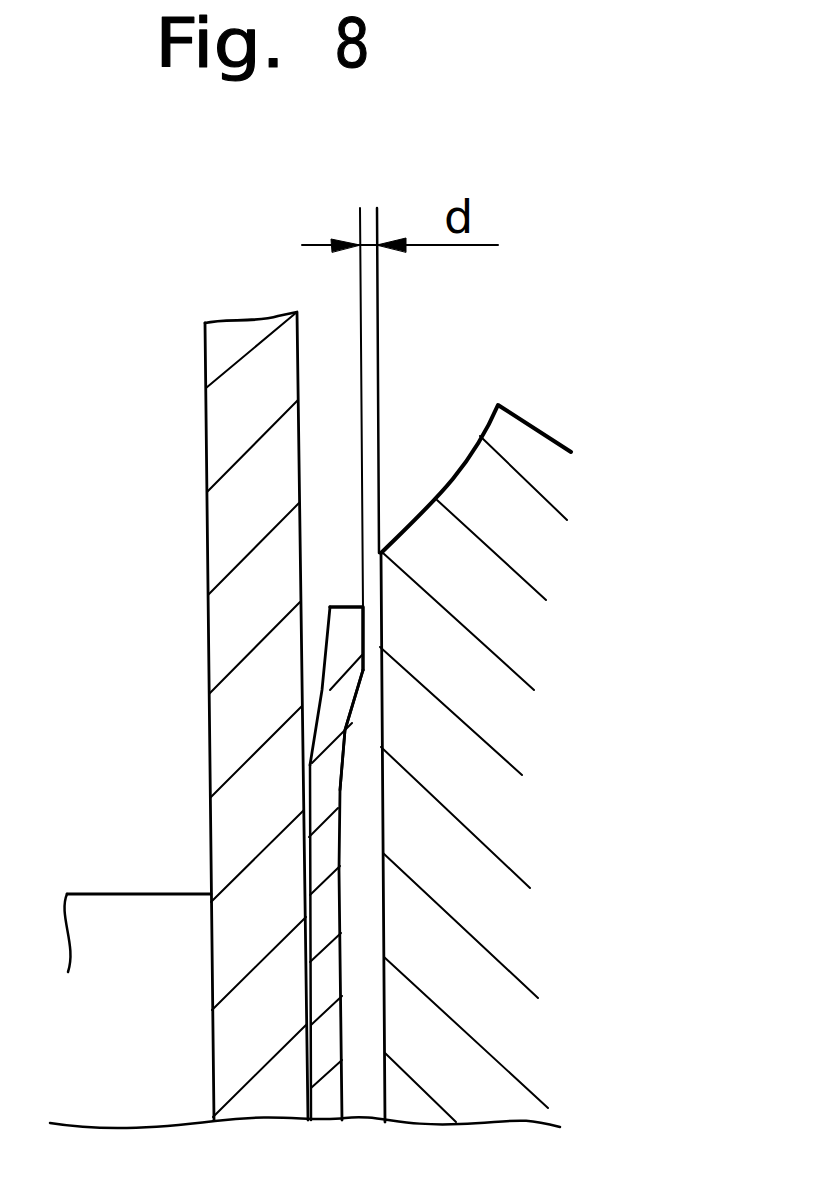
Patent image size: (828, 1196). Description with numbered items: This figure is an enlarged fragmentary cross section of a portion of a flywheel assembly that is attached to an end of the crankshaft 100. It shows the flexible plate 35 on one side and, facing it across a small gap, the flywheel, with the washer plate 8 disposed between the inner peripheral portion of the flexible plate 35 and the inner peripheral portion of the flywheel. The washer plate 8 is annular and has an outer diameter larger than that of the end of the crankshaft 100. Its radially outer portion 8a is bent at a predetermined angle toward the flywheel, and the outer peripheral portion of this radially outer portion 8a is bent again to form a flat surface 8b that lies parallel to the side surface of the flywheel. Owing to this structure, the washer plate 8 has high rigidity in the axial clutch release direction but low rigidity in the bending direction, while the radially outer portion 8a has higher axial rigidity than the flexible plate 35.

The flexible plate 35 is at (208, 559).
The crankshaft 100 is at (102, 911).
The washer plate 8 is at (538, 842).
The radially outer portion 8a is at (340, 716).
The flat surface 8b is at (352, 648).